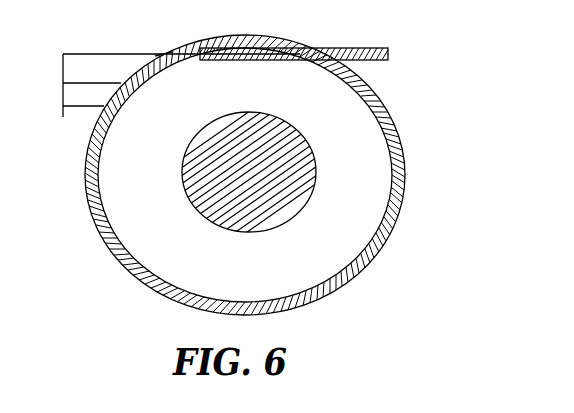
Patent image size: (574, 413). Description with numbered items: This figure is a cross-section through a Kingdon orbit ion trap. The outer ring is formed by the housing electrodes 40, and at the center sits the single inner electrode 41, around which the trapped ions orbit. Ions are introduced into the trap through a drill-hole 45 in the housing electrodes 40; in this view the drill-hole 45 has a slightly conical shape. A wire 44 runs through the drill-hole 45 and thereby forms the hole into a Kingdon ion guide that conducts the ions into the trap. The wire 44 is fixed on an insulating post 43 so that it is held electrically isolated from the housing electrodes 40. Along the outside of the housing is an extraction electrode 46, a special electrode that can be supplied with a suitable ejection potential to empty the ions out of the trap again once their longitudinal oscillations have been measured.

The housing electrodes 40 is at (245, 175).
The single inner electrode 41 is at (250, 170).
The insulating post 43 is at (92, 94).
The wire 44 is at (176, 78).
The drill-hole 45 is at (165, 56).
The extraction electrode 46 is at (292, 47).